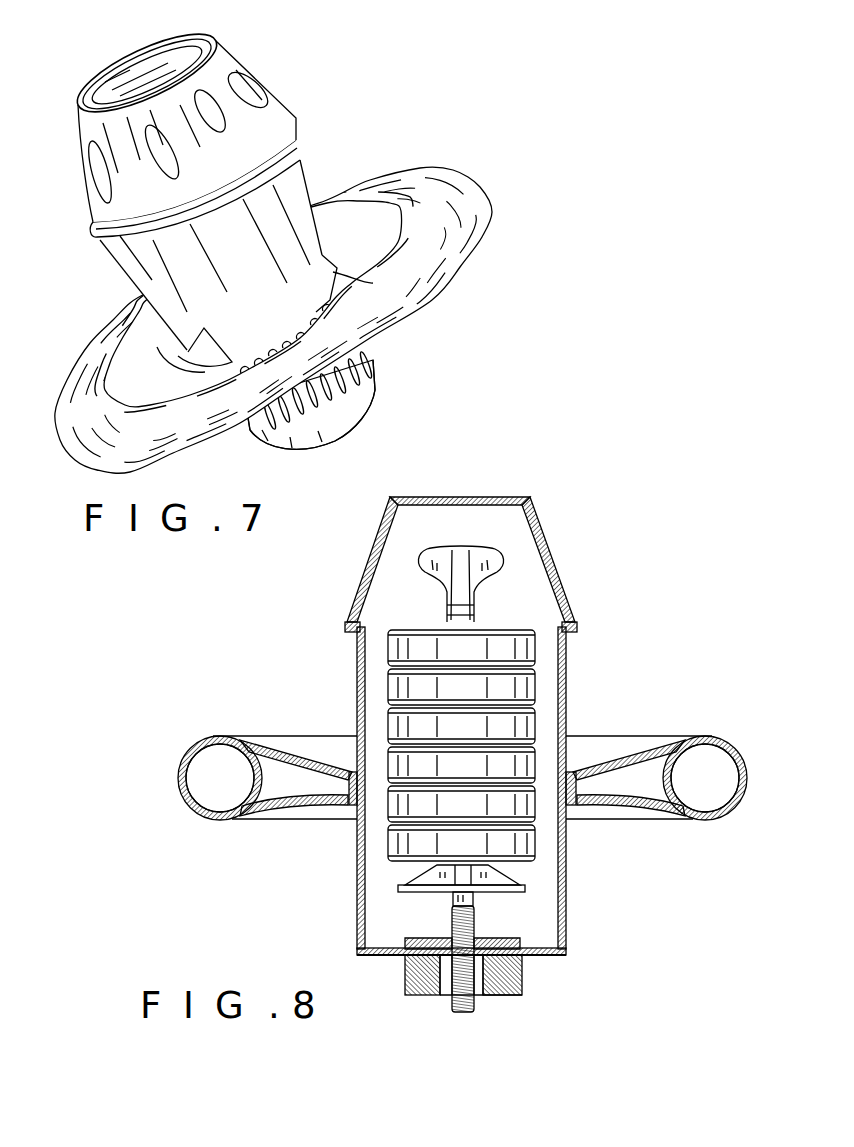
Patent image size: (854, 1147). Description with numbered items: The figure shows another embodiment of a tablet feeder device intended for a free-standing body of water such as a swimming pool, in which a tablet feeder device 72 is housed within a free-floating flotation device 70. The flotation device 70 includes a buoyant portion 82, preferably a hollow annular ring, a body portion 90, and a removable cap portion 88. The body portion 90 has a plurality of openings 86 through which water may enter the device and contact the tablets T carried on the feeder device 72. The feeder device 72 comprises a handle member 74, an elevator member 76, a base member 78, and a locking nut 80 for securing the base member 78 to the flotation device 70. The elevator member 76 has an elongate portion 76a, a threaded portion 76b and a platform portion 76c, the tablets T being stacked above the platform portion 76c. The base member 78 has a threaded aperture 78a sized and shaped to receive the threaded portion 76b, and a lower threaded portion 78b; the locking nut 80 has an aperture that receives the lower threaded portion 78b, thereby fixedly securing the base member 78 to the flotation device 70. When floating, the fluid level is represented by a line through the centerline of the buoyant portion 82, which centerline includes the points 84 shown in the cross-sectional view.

In FIG. 7, the flotation device 70 is at (490, 162).
In FIG. 8, the flotation device 70 is at (592, 508).
In FIG. 8, the tablet feeder device 72 is at (497, 619).
In FIG. 8, the handle member 74 is at (468, 545).
In FIG. 8, the elevator member 76 is at (452, 900).
In FIG. 8, the elongate portion 76a is at (447, 618).
In FIG. 8, the threaded portion 76b is at (478, 923).
In FIG. 8, the platform portion 76c is at (525, 877).
In FIG. 8, the base member 78 is at (522, 947).
In FIG. 8, the threaded aperture 78a is at (405, 975).
In FIG. 8, the lower threaded portion 78b is at (522, 975).
In FIG. 8, the locking nut 80 is at (512, 1010).
In FIG. 7, the buoyant portion 82 is at (476, 250).
In FIG. 8, the buoyant portion 82 is at (193, 763).
In FIG. 8, the centerline points 84 is at (222, 776).
In FIG. 7, the openings 86 is at (358, 398).
In FIG. 7, the removable cap portion 88 is at (240, 62).
In FIG. 8, the removable cap portion 88 is at (552, 560).
In FIG. 7, the body portion 90 is at (302, 172).
In FIG. 8, the body portion 90 is at (562, 677).
In FIG. 8, the tablets T is at (388, 695).